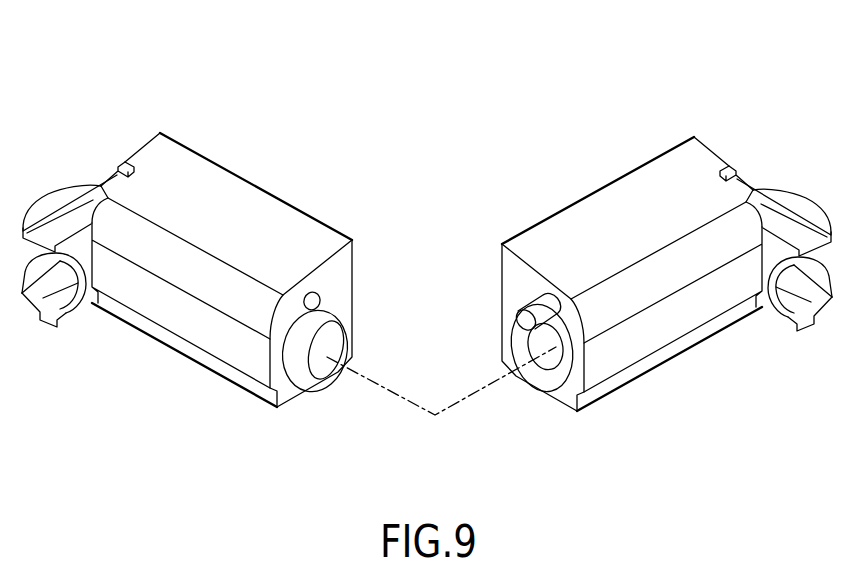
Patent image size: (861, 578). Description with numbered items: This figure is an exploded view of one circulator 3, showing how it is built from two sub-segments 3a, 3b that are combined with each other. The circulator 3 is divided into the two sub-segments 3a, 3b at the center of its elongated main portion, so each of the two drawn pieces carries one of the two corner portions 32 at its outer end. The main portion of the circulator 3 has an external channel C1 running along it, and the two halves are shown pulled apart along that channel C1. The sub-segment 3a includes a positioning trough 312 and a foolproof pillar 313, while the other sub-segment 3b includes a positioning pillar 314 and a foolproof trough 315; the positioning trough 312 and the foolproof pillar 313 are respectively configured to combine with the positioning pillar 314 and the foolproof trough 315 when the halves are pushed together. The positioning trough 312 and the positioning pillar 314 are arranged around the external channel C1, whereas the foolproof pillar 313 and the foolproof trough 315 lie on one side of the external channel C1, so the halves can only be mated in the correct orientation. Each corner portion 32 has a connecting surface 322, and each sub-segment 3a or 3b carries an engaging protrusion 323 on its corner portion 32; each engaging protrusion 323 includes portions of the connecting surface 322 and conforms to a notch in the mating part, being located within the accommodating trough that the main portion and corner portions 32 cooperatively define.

The circulator 3 is at (85, 36).
The sub-segment 3a is at (576, 190).
The sub-segment 3b is at (255, 184).
The corner portion 32 is at (58, 198).
The connecting surface 322 is at (58, 298).
The engaging protrusion 323 is at (82, 305).
The positioning trough 312 is at (550, 382).
The foolproof pillar 313 is at (535, 305).
The positioning pillar 314 is at (300, 380).
The foolproof trough 315 is at (320, 299).
The external channel C1 is at (332, 347).